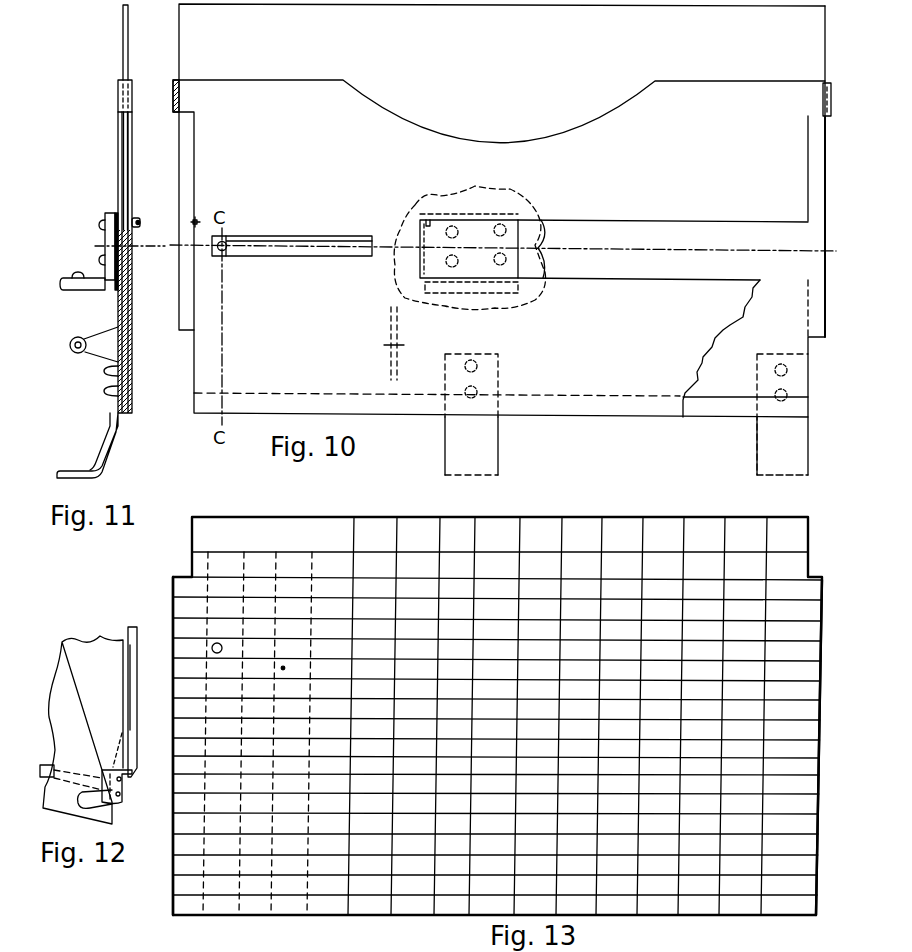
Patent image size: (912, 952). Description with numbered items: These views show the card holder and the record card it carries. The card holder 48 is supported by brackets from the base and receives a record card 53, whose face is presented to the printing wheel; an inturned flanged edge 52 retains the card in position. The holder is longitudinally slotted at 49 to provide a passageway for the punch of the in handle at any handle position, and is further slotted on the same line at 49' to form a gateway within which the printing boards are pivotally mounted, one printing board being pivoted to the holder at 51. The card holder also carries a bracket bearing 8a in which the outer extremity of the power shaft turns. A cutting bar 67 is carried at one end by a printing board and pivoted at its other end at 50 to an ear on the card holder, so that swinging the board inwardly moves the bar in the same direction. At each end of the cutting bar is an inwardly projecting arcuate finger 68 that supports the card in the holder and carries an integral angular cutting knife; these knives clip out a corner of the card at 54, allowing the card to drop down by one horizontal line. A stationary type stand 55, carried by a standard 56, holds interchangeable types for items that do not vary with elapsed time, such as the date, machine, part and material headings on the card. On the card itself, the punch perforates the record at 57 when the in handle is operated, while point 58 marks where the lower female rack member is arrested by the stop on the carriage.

In FIG. 11, the record card 53 is at (122, 45).
In FIG. 10, the record card 53 is at (499, 210).
In FIG. 13, the record card 53 is at (284, 519).
In FIG. 12, the record card 53 is at (90, 648).
In FIG. 11, the card holder 48 is at (118, 144).
In FIG. 10, the card holder 48 is at (398, 133).
In FIG. 11, the inturned flanged edge 52 is at (118, 97).
In FIG. 10, the inturned flanged edge 52 is at (823, 98).
In FIG. 10, the clipped corner section of the card 54 is at (184, 334).
In FIG. 13, the clipped corner section of the card 54 is at (192, 578).
In FIG. 12, the clipped corner section of the card 54 is at (110, 770).
In FIG. 11, the longitudinal slot 49 is at (130, 260).
In FIG. 10, the longitudinal slot 49 is at (503, 231).
In FIG. 10, the longitudinal slot (gateway) 49' is at (663, 237).
In FIG. 11, the cutting bar pivot 50 is at (139, 222).
In FIG. 10, the cutting bar pivot 50 is at (198, 221).
In FIG. 10, the printing board pivot 51 is at (426, 220).
In FIG. 11, the stationary type stand 55 is at (110, 213).
In FIG. 10, the stationary type stand 55 is at (485, 232).
In FIG. 11, the standard 56 is at (101, 278).
In FIG. 10, the standard 56 is at (473, 256).
In FIG. 10, the perforation 57 is at (226, 250).
In FIG. 13, the perforation 57 is at (212, 648).
In FIG. 13, the arrest point on the card 58 is at (283, 668).
In FIG. 11, the bracket bearing 8a is at (88, 360).
In FIG. 12, the cutting bar 67 is at (50, 767).
In FIG. 12, the arcuate finger 68 is at (115, 802).